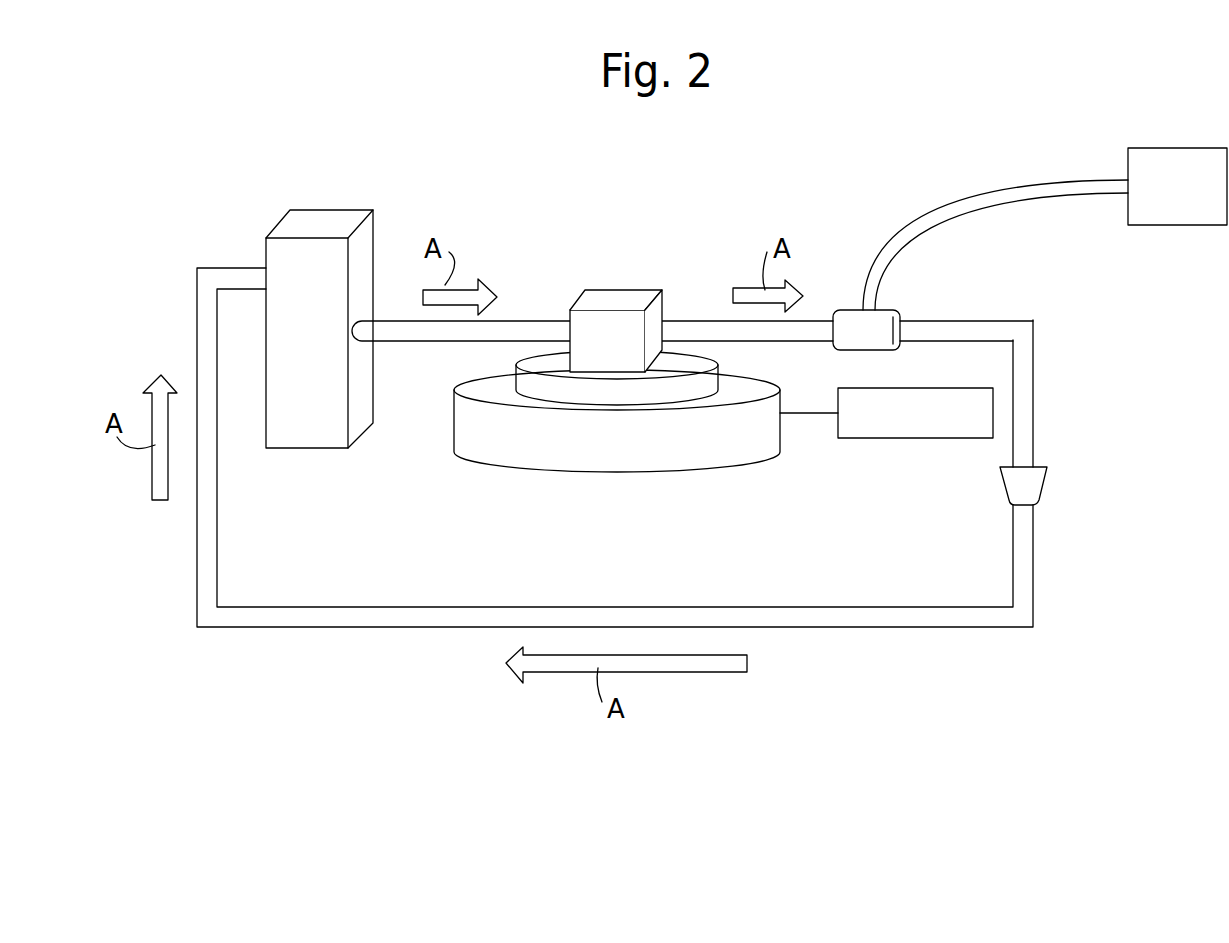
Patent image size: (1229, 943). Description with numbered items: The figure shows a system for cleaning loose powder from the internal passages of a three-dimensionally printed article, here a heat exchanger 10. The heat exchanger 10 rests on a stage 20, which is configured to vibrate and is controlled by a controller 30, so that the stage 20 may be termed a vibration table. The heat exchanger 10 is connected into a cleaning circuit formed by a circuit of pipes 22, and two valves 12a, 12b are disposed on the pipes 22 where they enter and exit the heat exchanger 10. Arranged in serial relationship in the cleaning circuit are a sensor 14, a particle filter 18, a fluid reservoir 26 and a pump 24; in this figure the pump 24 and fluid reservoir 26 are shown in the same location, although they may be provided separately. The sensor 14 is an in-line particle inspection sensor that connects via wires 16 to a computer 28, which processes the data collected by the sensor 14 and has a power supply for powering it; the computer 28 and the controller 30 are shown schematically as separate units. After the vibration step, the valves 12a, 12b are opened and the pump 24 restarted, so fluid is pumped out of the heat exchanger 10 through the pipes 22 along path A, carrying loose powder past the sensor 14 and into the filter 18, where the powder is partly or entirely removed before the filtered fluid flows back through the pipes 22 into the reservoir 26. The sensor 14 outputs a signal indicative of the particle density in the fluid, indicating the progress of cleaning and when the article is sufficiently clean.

The heat exchanger 10 is at (622, 318).
The valve 12a is at (566, 328).
The valve 12b is at (673, 325).
The sensor 14 is at (853, 317).
The wires 16 is at (933, 218).
The particle filter 18 is at (1032, 478).
The stage 20 is at (672, 450).
The pipes 22 is at (298, 628).
The pump 24 is at (319, 365).
The fluid reservoir 26 is at (313, 423).
The computer 28 is at (1177, 147).
The controller 30 is at (890, 425).